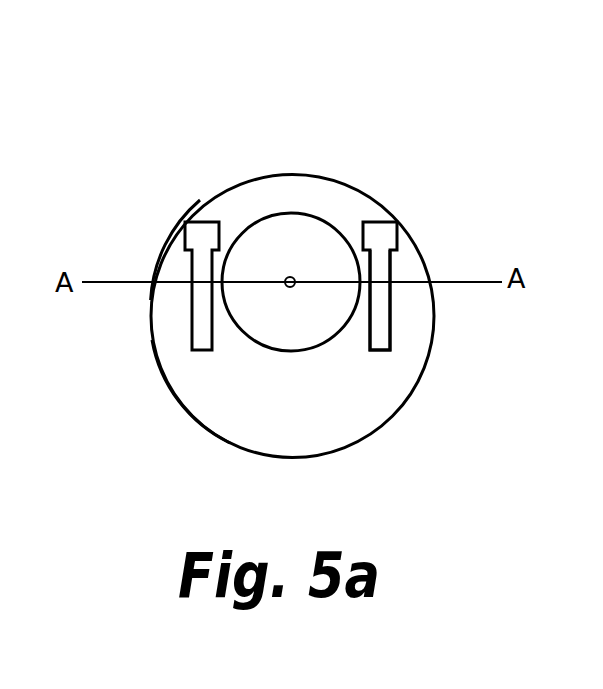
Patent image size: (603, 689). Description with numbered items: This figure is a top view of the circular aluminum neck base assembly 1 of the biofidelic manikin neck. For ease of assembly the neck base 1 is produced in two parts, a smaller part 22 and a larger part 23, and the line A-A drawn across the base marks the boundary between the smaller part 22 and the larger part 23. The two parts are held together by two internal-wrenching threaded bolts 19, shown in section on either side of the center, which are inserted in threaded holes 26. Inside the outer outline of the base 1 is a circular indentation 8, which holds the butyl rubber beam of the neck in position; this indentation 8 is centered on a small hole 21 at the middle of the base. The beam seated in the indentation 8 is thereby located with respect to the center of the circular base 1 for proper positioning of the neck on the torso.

The neck base assembly 1 is at (435, 340).
The circular indentation 8 is at (268, 352).
The internal-wrenching threaded bolts 19 is at (205, 222).
The hole 21 is at (293, 277).
The smaller part 22 is at (167, 245).
The larger part 23 is at (177, 405).
The threaded holes 26 is at (393, 265).